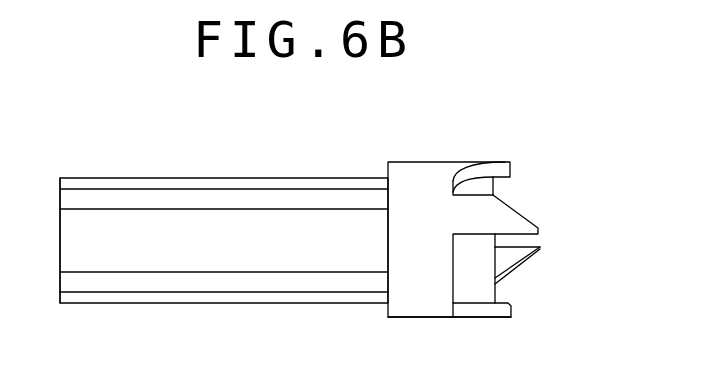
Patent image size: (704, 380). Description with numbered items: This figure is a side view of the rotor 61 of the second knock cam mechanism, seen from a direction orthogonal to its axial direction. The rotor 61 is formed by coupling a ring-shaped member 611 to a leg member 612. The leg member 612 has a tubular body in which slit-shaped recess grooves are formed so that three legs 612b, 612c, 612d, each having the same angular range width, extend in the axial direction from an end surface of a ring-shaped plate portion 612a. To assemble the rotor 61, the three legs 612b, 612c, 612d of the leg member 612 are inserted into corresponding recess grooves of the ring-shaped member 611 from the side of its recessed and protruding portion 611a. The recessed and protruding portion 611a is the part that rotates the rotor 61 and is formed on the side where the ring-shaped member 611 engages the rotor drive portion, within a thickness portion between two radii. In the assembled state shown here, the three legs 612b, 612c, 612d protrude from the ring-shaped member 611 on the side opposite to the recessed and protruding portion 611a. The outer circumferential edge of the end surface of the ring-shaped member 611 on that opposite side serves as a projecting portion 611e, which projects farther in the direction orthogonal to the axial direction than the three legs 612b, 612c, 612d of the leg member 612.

The rotor 61 is at (448, 120).
The ring-shaped member 611 is at (417, 183).
The leg member 612 is at (345, 223).
The ring-shaped plate portion 612a is at (490, 189).
The leg 612b is at (62, 243).
The leg 612c is at (178, 185).
The leg 612d is at (152, 296).
The recessed and protruding portion 611a is at (518, 268).
The projecting portion 611e is at (386, 309).